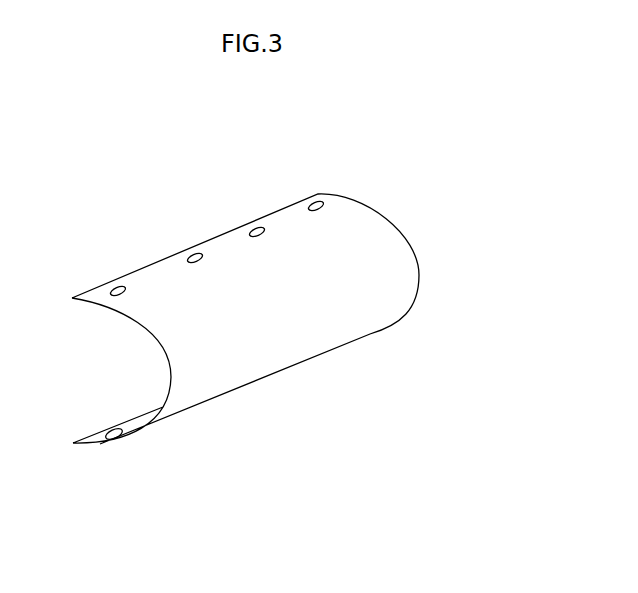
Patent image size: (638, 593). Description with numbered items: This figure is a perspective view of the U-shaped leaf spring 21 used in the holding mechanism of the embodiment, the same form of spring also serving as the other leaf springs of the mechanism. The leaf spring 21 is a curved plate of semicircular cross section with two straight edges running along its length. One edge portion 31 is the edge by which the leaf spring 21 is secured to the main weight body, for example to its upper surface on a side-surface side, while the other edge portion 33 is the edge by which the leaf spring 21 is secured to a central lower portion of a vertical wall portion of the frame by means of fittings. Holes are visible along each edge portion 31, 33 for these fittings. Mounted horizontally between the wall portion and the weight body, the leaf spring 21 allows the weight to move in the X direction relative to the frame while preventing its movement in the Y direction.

The leaf spring 21 is at (307, 338).
The one edge portion 31 is at (222, 248).
The other edge portion 33 is at (138, 423).